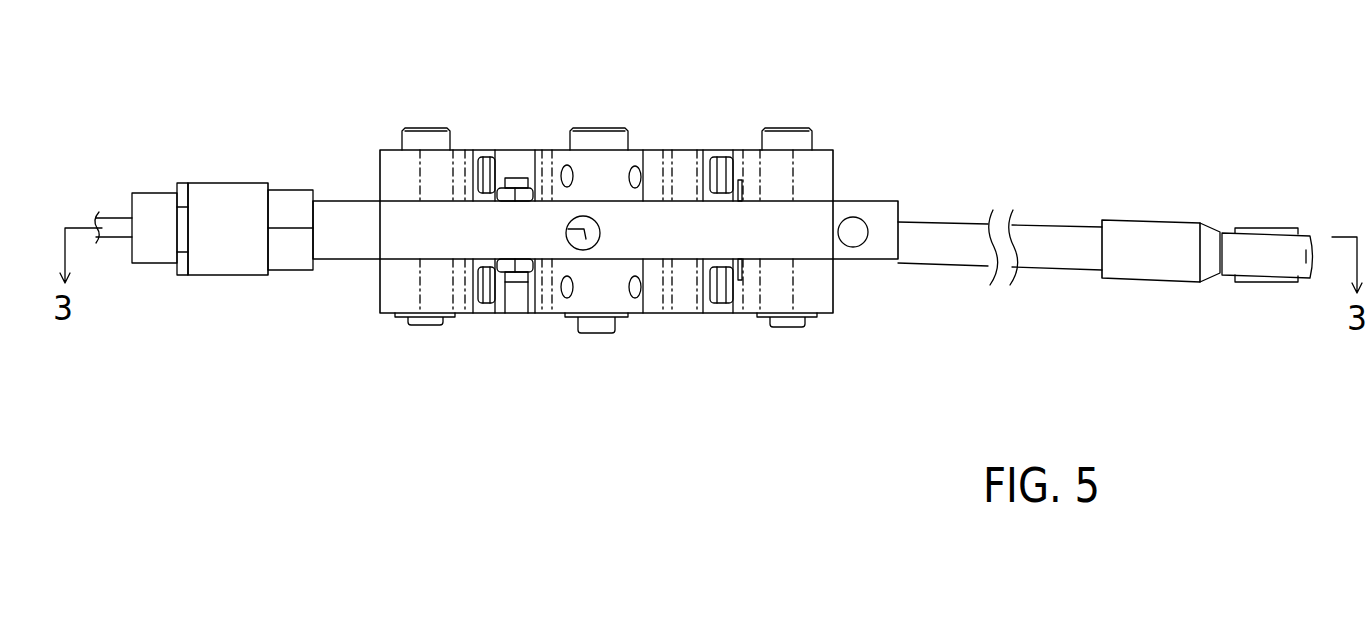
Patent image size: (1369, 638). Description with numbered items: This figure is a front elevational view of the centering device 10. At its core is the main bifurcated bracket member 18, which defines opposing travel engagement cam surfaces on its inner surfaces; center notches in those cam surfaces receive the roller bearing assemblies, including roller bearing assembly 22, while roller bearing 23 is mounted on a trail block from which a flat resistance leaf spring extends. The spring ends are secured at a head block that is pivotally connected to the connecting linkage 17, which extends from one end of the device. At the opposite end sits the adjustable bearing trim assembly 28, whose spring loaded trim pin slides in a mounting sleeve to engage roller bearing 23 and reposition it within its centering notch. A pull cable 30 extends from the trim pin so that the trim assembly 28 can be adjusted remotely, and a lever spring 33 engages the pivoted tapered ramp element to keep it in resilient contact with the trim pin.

The centering device 10 is at (869, 107).
The connecting linkage 17 is at (1053, 237).
The main bifurcated bracket member 18 is at (815, 225).
The roller bearing assembly 22 is at (792, 116).
The roller bearing 23 is at (432, 116).
The adjustable bearing trim assembly 28 is at (227, 293).
The pull cable 30 is at (118, 227).
The lever spring 33 is at (588, 250).